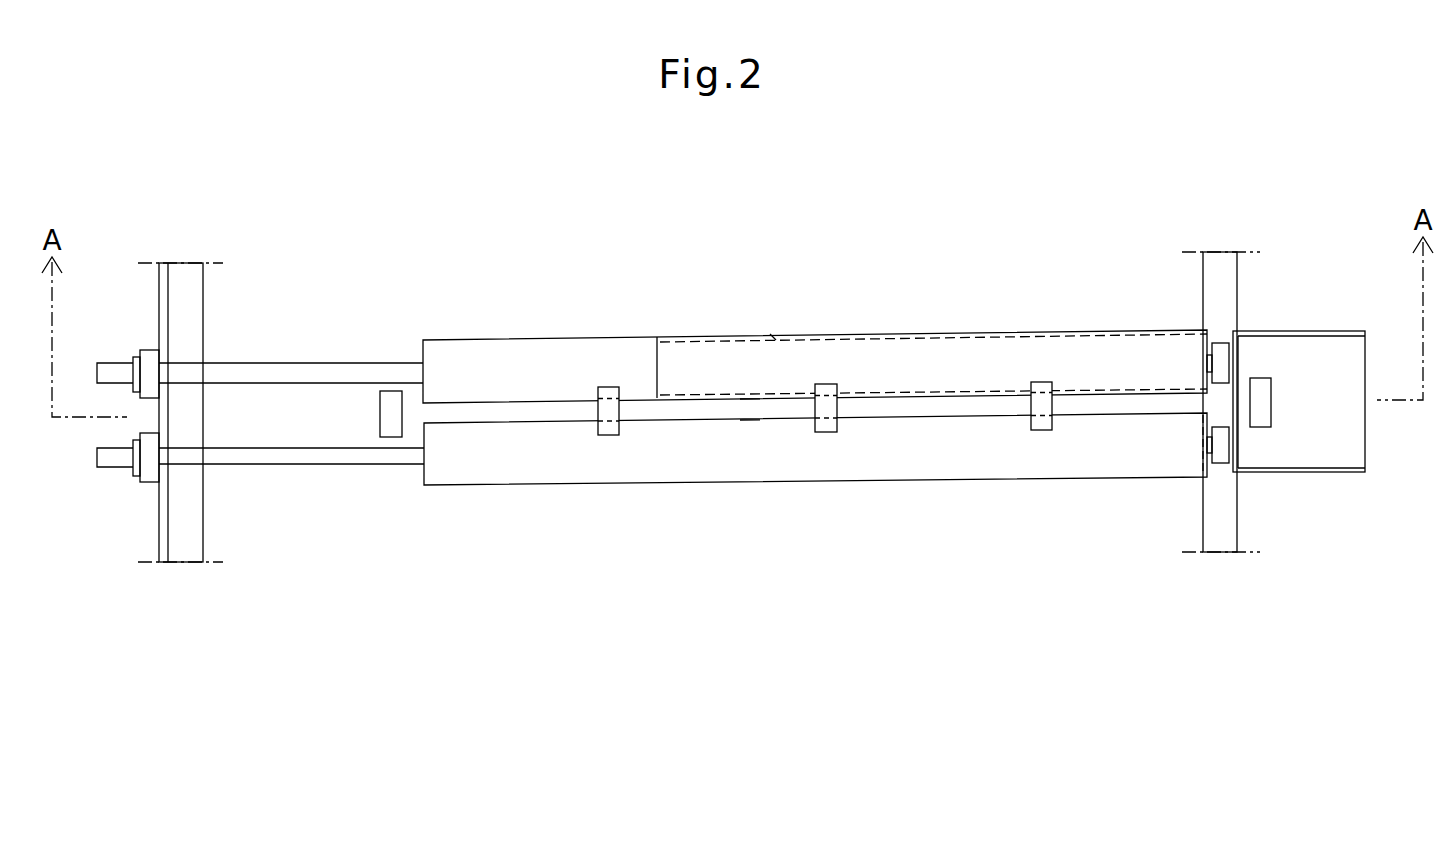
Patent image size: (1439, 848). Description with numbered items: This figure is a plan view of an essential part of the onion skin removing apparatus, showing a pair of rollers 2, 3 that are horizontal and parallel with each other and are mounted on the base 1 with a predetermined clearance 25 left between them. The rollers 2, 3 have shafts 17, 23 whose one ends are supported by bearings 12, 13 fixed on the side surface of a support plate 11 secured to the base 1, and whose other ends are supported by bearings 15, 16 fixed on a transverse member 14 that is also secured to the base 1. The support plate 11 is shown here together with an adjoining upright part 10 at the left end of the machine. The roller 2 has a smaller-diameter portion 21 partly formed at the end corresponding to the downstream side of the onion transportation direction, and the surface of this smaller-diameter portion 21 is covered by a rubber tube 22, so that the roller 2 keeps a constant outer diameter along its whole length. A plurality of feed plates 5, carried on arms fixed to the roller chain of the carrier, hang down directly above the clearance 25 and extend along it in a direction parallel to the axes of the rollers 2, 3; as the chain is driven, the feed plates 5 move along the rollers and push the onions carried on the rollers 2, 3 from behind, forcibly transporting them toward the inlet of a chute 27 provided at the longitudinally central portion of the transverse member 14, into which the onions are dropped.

The base 1 is at (172, 290).
The left support post 10 is at (185, 330).
The support plate 11 is at (165, 525).
The bearing 12 is at (148, 368).
The bearing 13 is at (152, 462).
The shaft 17 is at (310, 372).
The shaft 23 is at (310, 455).
The roller 2 is at (521, 358).
The roller 3 is at (530, 460).
The smaller-diameter portion 21 is at (773, 336).
The rubber tube 22 is at (952, 365).
The clearance 25 is at (752, 410).
The feed plate 5 is at (393, 420).
The transverse member 14 is at (1222, 505).
The bearing 15 is at (1220, 363).
The bearing 16 is at (1222, 442).
The chute 27 is at (1310, 400).